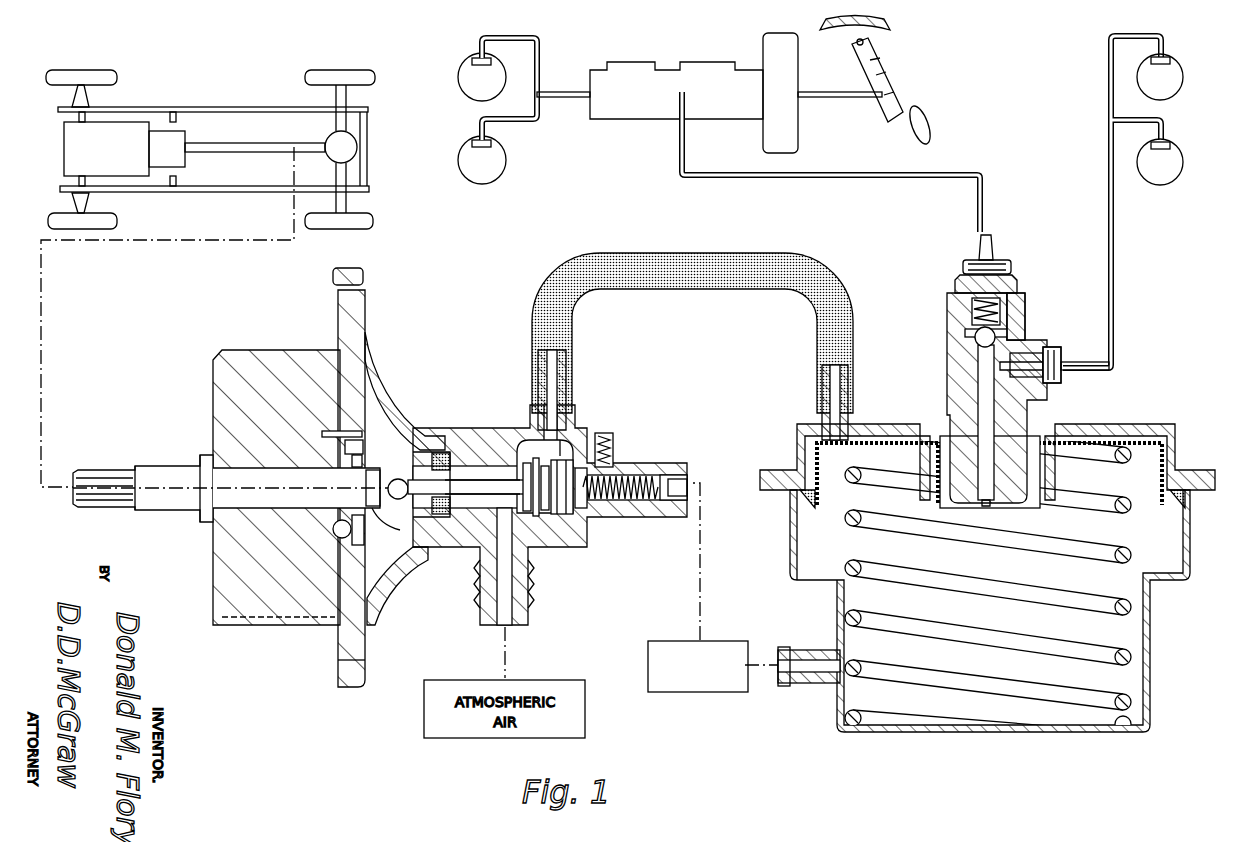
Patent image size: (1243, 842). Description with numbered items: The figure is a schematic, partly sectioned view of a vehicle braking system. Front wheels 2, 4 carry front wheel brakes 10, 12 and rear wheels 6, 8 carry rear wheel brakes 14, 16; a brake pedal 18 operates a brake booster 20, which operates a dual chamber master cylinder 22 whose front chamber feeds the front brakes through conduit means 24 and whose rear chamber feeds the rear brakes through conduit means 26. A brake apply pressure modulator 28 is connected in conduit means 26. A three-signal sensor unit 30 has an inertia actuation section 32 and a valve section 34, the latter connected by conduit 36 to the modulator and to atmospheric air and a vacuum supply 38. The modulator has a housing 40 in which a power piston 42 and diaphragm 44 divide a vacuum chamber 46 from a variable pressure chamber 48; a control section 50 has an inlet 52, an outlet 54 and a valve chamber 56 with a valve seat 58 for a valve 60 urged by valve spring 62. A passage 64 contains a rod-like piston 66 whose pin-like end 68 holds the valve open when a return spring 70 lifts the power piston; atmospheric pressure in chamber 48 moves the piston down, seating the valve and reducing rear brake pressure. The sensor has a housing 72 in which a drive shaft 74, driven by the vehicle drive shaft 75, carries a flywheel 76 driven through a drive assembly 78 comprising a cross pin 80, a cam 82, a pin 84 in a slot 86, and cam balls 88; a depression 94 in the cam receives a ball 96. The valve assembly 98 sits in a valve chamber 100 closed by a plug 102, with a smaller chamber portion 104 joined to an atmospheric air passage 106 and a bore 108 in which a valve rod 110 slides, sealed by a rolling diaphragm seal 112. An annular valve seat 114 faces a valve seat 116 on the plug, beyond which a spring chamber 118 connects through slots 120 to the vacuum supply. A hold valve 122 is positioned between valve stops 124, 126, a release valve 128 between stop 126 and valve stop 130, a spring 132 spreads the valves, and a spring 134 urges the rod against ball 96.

The front wheel 2 is at (112, 77).
The front wheel 4 is at (108, 222).
The rear wheel 6 is at (318, 72).
The rear wheel 8 is at (368, 221).
The front wheel brake 10 is at (458, 68).
The front wheel brake 12 is at (458, 153).
The rear wheel brake 14 is at (1183, 82).
The rear wheel brake 16 is at (1182, 173).
The brake pedal 18 is at (925, 110).
The brake booster 20 is at (785, 144).
The dual chamber master cylinder 22 is at (700, 62).
The conduit means 24 is at (568, 97).
The conduit means 26 is at (678, 143).
The brake apply pressure modulator 28 is at (998, 476).
The three-signal sensor unit 30 is at (337, 322).
The inertia actuation section 32 is at (244, 468).
The valve section 34 is at (564, 491).
The conduit 36 is at (715, 255).
The vacuum supply 38 is at (672, 692).
The housing 40 is at (1190, 535).
The power piston 42 is at (812, 510).
The diaphragm 44 is at (1162, 505).
The vacuum chamber 46 is at (1130, 597).
The variable pressure chamber 48 is at (1160, 428).
The brake apply pressure control section 50 is at (1011, 356).
The brake apply pressure inlet 52 is at (1000, 262).
The brake apply pressure outlet 54 is at (1043, 390).
The valve chamber 56 is at (1025, 318).
The valve seat 58 is at (995, 339).
The valve 60 is at (972, 325).
The valve spring 62 is at (955, 300).
The passage 64 is at (950, 378).
The rod-like piston 66 is at (978, 400).
The pin-like end 68 is at (965, 356).
The power piston return spring 70 is at (1130, 657).
The housing 72 is at (350, 688).
The drive shaft 74 is at (143, 470).
The vehicle drive shaft 75 is at (236, 147).
The flywheel 76 is at (222, 408).
The drive assembly 78 is at (378, 432).
The cross pin 80 is at (352, 461).
The cam 82 is at (356, 548).
The pin 84 is at (335, 430).
The slot 86 is at (352, 440).
The cam ball 88 is at (334, 534).
The depression 94 is at (379, 507).
The ball 96 is at (405, 532).
The valve assembly 98 is at (532, 516).
The valve chamber 100 is at (545, 510).
The cap or plug 102 is at (570, 514).
The chamber portion 104 is at (488, 466).
The atmospheric air passage 106 is at (490, 617).
The bore 108 is at (470, 494).
The valve rod 110 is at (482, 464).
The rolling diaphragm seal 112 is at (436, 453).
The annular valve seat 114 is at (503, 566).
The valve seat 116 is at (612, 500).
The spring chamber 118 is at (650, 500).
The slots 120 is at (687, 470).
The hold valve 122 is at (548, 440).
The valve stop 124 is at (533, 473).
The valve stop 126 is at (578, 508).
The release valve 128 is at (605, 433).
The valve stop 130 is at (618, 450).
The spring 132 is at (562, 440).
The spring 134 is at (700, 445).